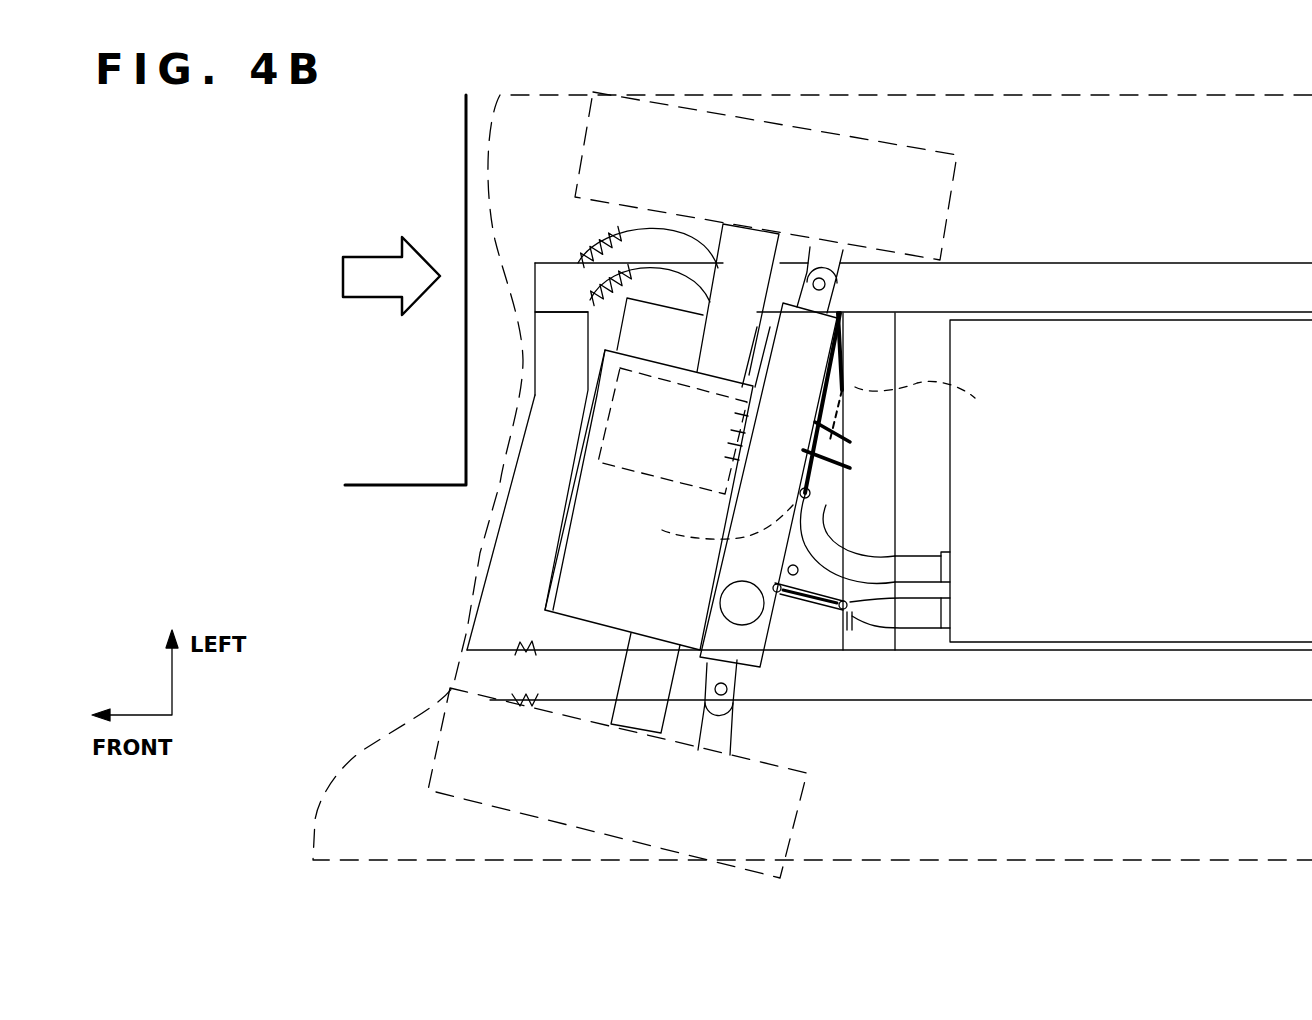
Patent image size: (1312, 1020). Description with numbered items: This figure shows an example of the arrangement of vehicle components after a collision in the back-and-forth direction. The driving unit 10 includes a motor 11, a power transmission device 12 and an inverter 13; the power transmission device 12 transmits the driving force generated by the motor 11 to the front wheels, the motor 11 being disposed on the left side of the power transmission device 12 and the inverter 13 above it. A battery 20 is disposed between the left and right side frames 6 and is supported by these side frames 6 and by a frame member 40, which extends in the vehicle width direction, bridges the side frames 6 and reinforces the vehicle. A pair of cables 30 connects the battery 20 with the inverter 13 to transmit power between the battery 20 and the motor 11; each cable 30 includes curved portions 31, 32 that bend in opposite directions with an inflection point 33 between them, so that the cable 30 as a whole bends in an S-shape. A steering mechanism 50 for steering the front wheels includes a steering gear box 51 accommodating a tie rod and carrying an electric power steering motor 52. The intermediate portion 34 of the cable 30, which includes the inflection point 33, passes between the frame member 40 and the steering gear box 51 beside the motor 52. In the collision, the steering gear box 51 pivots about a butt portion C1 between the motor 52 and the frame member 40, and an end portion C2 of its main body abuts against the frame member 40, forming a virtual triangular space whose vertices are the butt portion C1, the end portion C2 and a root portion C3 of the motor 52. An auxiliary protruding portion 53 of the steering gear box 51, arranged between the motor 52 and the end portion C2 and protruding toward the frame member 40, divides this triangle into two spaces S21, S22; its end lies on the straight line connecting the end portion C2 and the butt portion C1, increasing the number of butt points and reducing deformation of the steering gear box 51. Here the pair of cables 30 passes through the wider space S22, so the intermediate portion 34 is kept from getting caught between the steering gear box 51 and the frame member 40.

The side frames 6 is at (993, 282).
The driving unit 10 is at (543, 468).
The motor 11 is at (617, 325).
The power transmission device 12 is at (583, 535).
The inverter 13 is at (592, 380).
The battery 20 is at (1050, 627).
The cable 30 is at (898, 701).
The curved portion 31 is at (843, 370).
The curved portion 32 is at (905, 552).
The inflection point 33 is at (840, 423).
The intermediate portion 34 is at (825, 537).
The frame member 40 is at (887, 327).
The steering mechanism 50 is at (838, 745).
The steering gear box 51 is at (752, 692).
The motor 52 is at (805, 663).
The auxiliary protruding portion 53 is at (837, 460).
The butt portion C1 is at (848, 632).
The end portion C2 is at (845, 318).
The root portion C3 is at (782, 600).
The space S21 is at (945, 405).
The space S22 is at (705, 522).